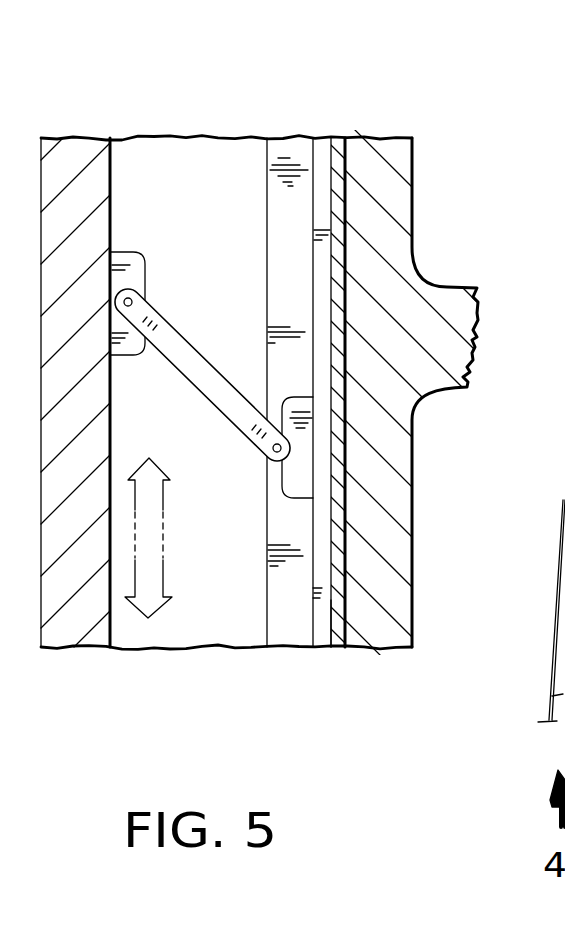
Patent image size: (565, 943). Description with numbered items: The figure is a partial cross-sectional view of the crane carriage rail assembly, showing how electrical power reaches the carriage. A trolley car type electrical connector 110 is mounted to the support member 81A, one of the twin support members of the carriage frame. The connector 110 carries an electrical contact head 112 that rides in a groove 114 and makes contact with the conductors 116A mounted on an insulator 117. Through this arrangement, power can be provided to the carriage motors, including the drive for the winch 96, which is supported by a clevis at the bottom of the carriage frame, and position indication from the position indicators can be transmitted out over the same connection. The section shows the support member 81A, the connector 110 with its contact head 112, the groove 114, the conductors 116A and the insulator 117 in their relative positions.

The support member 81A is at (80, 138).
The groove 114 is at (297, 153).
The conductor 116A is at (316, 201).
The trolley car type electrical connector 110 is at (217, 346).
The electrical contact head 112 is at (295, 477).
The insulator 117 is at (340, 648).
The winch 96 is at (564, 455).